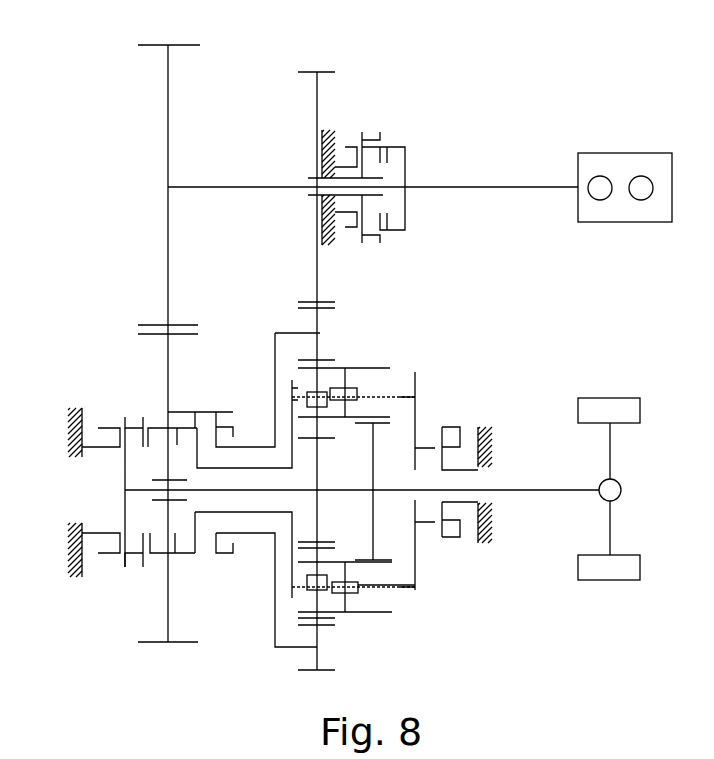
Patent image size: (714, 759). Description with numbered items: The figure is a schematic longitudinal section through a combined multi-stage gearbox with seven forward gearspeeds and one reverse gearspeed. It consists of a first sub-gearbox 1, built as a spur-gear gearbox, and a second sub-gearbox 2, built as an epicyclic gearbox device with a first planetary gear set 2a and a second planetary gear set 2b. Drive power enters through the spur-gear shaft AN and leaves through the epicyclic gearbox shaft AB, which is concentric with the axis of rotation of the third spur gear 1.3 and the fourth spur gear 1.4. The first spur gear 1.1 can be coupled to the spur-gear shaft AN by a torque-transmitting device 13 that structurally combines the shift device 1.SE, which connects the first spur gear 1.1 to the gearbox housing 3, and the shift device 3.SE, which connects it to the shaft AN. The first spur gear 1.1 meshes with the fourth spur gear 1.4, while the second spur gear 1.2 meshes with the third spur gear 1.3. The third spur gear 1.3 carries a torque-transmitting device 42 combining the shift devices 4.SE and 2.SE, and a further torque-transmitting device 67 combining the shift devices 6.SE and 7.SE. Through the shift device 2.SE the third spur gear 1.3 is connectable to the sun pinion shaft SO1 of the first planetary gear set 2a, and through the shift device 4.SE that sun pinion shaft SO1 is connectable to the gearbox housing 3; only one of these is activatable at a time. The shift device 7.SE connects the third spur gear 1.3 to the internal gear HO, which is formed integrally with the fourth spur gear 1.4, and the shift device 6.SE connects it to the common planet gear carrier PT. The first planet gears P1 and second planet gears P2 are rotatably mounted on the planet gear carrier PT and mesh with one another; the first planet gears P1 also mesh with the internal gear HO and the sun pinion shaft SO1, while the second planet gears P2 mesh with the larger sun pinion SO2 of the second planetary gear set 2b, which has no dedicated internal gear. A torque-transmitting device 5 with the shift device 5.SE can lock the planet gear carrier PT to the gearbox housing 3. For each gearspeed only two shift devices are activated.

The first sub-gearbox 1 is at (450, 88).
The first spur gear 1.1 is at (322, 92).
The second spur gear 1.2 is at (168, 85).
The third spur gear 1.3 is at (165, 365).
The fourth spur gear 1.4 is at (325, 298).
The torque-transmitting device 13 is at (398, 77).
The first shift device 1.SE is at (385, 122).
The shift device 3.SE is at (385, 122).
The second sub-gearbox 2 is at (493, 630).
The first planetary gear set 2a is at (292, 657).
The second planetary gear set 2b is at (388, 620).
The shift device 2.SE is at (152, 405).
The shift device 4.SE is at (152, 405).
The shift device 5.SE is at (445, 421).
The shift device 6.SE is at (188, 403).
The shift device 7.SE is at (200, 394).
The gearbox housing 3 is at (322, 215).
The torque-transmitting device 42 is at (108, 382).
The torque-transmitting device 5 is at (488, 410).
The torque-transmitting device 67 is at (231, 372).
The spur-gear shaft AN is at (542, 187).
The epicyclic gearbox shaft AB is at (537, 490).
The internal gear HO is at (313, 335).
The first planet gears P1 is at (335, 362).
The second planet gears P2 is at (382, 367).
The planet gear carrier PT is at (230, 473).
The sun pinion shaft SO1 is at (318, 532).
The sun pinion SO2 is at (373, 426).